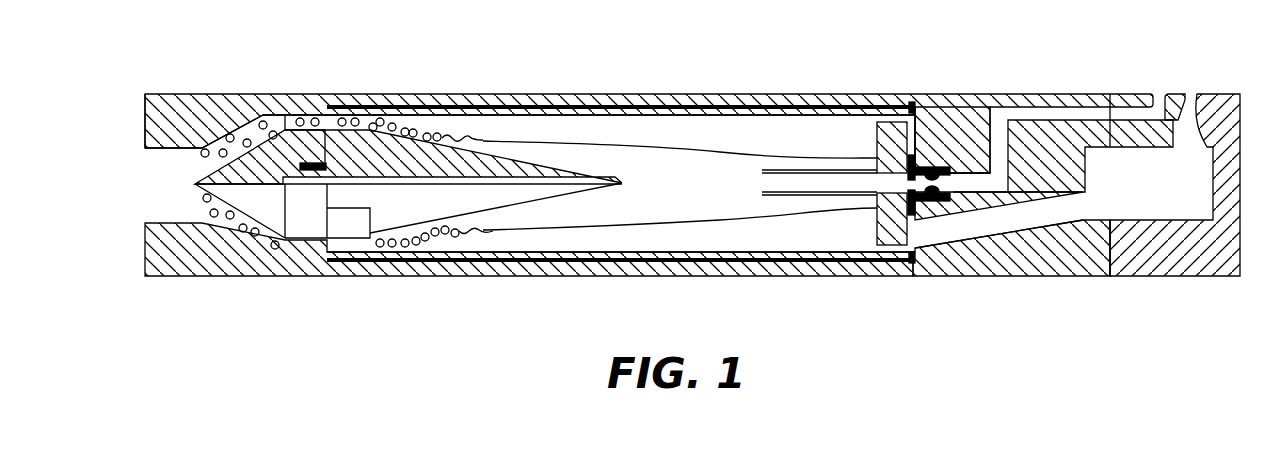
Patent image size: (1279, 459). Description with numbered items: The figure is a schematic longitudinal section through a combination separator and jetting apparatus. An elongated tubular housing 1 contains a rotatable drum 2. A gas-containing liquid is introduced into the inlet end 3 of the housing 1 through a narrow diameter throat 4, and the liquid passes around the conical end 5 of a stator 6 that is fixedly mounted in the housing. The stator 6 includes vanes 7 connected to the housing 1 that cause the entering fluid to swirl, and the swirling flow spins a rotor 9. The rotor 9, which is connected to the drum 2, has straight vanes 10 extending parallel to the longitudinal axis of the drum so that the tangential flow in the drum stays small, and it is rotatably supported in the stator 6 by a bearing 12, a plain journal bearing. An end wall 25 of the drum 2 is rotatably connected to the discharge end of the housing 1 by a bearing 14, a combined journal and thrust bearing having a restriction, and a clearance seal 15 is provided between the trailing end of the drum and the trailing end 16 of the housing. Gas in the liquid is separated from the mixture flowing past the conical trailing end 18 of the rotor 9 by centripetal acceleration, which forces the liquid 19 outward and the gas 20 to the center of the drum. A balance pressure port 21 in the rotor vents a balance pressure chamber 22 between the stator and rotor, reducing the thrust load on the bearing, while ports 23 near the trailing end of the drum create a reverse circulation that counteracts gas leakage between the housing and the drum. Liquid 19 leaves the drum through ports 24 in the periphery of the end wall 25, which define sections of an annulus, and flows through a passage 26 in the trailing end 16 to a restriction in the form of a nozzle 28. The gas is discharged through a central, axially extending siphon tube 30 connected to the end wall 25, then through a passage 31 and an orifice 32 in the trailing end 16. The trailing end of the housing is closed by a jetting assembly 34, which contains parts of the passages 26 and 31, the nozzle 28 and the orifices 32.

The tubular housing 1 is at (587, 97).
The rotatable drum 2 is at (650, 121).
The inlet end 3 is at (143, 120).
The narrow diameter throat 4 is at (167, 228).
The conical end 5 is at (240, 125).
The stator 6 is at (245, 237).
The vanes 7 is at (315, 192).
The rotor 9 is at (365, 135).
The straight vanes 10 is at (363, 213).
The bearing 12 is at (325, 165).
The bearing 14 is at (930, 157).
The clearance seal 15 is at (912, 95).
The trailing end 16 is at (978, 98).
The conical trailing end 18 is at (485, 198).
The liquid 19 is at (510, 123).
The gas 20 is at (670, 197).
The balance pressure port 21 is at (553, 180).
The balance pressure chamber 22 is at (318, 160).
The ports 23 is at (905, 105).
The ports 24 is at (877, 128).
The end wall 25 is at (865, 245).
The passage 26 is at (990, 235).
The nozzle 28 is at (1193, 100).
The siphon tube 30 is at (762, 175).
The passage 31 is at (1048, 115).
The orifice 32 is at (1155, 100).
The jetting assembly 34 is at (1167, 277).